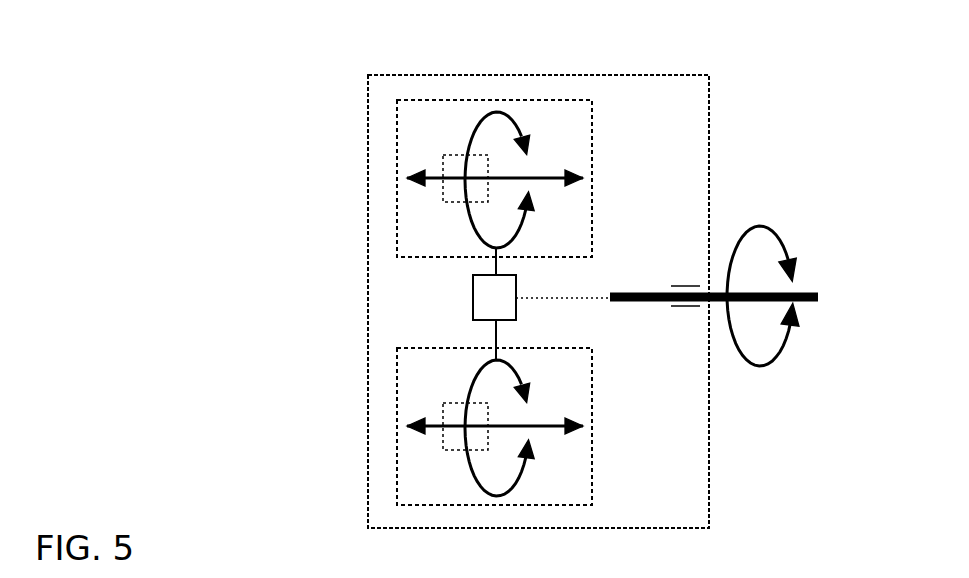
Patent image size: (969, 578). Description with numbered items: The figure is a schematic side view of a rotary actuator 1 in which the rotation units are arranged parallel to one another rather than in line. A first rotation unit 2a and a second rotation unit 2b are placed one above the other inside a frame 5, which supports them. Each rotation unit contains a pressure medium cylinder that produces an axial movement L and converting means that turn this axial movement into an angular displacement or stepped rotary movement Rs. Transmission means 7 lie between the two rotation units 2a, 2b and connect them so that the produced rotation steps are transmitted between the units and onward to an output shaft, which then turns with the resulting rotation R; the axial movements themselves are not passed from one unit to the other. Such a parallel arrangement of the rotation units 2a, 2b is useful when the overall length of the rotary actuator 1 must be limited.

The rotary actuator 1 is at (182, 57).
The frame 5 is at (393, 75).
The first rotation unit 2a is at (397, 137).
The second rotation unit 2b is at (399, 383).
The transmission means 7 is at (480, 296).